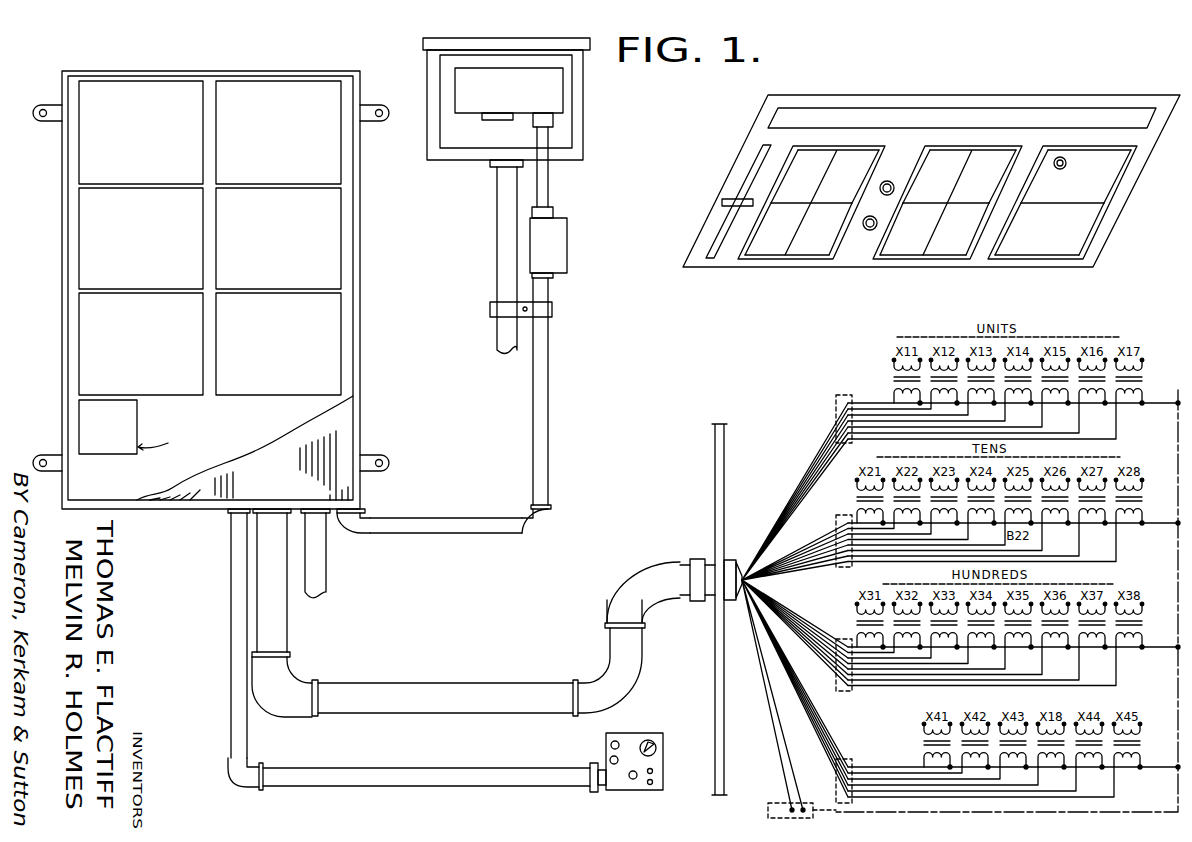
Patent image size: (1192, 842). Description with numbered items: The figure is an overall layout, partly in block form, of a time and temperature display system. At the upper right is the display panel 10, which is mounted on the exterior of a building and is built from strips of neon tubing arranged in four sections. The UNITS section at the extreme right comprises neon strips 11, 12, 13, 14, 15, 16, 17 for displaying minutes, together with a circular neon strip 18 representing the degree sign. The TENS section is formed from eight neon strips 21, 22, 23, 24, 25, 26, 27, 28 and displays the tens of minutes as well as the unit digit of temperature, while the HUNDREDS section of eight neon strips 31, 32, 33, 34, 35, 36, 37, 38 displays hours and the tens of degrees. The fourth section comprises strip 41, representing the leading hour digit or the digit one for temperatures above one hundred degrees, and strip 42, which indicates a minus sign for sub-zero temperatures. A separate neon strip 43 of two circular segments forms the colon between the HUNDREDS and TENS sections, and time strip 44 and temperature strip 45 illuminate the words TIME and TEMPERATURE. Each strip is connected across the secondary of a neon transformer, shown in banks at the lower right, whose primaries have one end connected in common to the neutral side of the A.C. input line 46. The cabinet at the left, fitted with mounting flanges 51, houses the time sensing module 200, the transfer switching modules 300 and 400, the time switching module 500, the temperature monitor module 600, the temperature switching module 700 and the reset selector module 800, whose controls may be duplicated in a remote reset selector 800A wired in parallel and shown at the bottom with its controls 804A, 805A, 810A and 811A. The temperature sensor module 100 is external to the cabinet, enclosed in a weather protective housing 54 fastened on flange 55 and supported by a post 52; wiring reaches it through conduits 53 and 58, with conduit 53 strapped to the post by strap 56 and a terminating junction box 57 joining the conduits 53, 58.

The display panel 10 is at (1136, 185).
The neon strip 11 is at (1079, 148).
The neon strip 12 is at (1115, 185).
The neon strip 13 is at (1087, 239).
The neon strip 14 is at (1035, 257).
The neon strip 15 is at (1016, 229).
The neon strip 16 is at (1028, 189).
The neon strip 17 is at (1063, 203).
The circular neon strip 18 is at (1068, 164).
The neon strip 21 is at (961, 148).
The neon strip 22 is at (999, 178).
The neon strip 23 is at (976, 231).
The neon strip 24 is at (903, 257).
The neon strip 25 is at (900, 231).
The neon strip 26 is at (920, 163).
The neon strip 27 is at (925, 203).
The neon strip 28 is at (956, 173).
The neon strip 31 is at (821, 148).
The neon strip 32 is at (873, 164).
The neon strip 33 is at (841, 233).
The neon strip 34 is at (771, 257).
The neon strip 35 is at (751, 239).
The neon strip 36 is at (781, 179).
The neon strip 37 is at (797, 203).
The neon strip 38 is at (826, 173).
The neon strip 41 is at (750, 168).
The neon strip 42 is at (722, 203).
The neon strip 43 is at (888, 181).
The time strip 44 is at (869, 108).
The temperature strip 45 is at (1057, 108).
The A.C. input line 46 is at (1166, 812).
The mounting flanges 51 is at (40, 122).
The post 52 is at (497, 267).
The conduits 53 is at (533, 434).
The weather protective housing 54 is at (584, 114).
The flange 55 is at (480, 166).
The strap 56 is at (490, 311).
The terminating junction box 57 is at (556, 224).
The conduit 58 is at (549, 180).
The temperature sensor module 100 is at (509, 94).
The time sensing module 200 is at (141, 344).
The transfer switching module 300 is at (278, 344).
The transfer switching module 400 is at (278, 238).
The time switching module 500 is at (141, 238).
The temperature monitor module 600 is at (141, 132).
The temperature switching module 700 is at (278, 132).
The reset selector module 800 is at (188, 427).
The remote reset selector 800A is at (641, 733).
The remote reset selector terminal 804A is at (610, 743).
The remote reset selector terminal 805A is at (609, 760).
The remote reset selector contacts 810A is at (655, 776).
The remote reset selector dial 811A is at (656, 745).